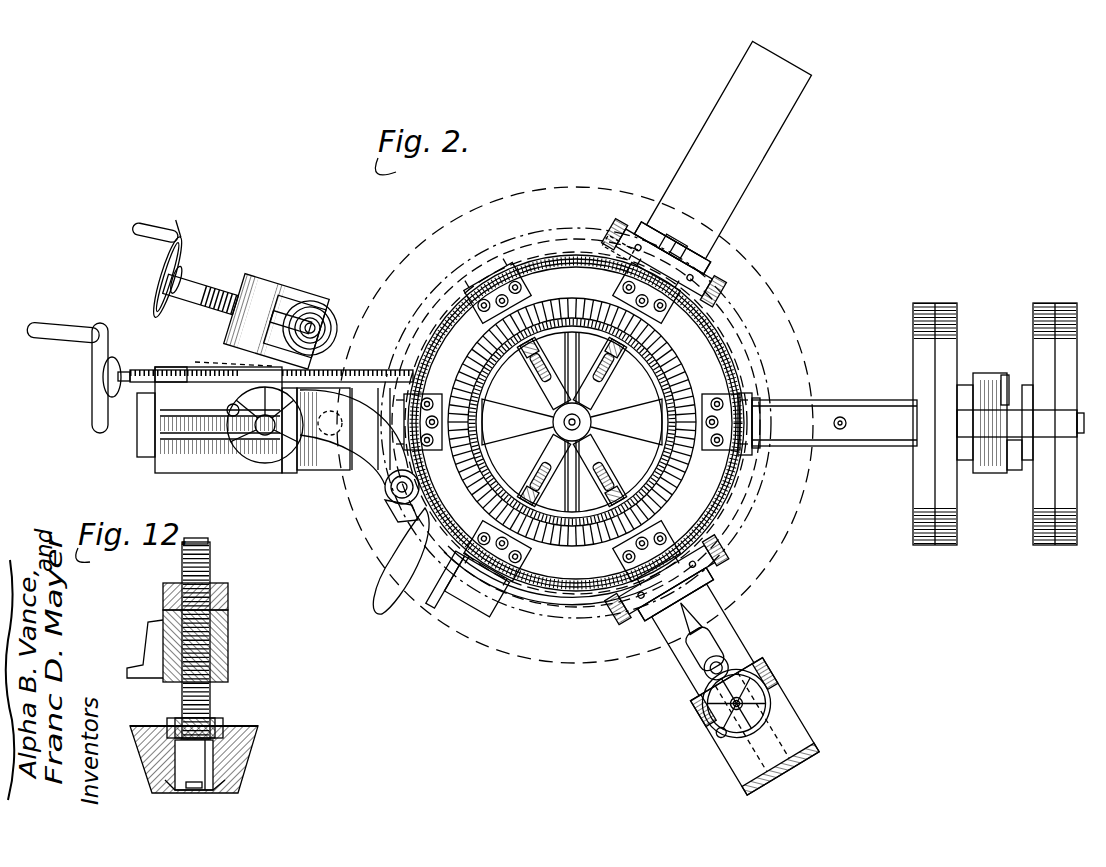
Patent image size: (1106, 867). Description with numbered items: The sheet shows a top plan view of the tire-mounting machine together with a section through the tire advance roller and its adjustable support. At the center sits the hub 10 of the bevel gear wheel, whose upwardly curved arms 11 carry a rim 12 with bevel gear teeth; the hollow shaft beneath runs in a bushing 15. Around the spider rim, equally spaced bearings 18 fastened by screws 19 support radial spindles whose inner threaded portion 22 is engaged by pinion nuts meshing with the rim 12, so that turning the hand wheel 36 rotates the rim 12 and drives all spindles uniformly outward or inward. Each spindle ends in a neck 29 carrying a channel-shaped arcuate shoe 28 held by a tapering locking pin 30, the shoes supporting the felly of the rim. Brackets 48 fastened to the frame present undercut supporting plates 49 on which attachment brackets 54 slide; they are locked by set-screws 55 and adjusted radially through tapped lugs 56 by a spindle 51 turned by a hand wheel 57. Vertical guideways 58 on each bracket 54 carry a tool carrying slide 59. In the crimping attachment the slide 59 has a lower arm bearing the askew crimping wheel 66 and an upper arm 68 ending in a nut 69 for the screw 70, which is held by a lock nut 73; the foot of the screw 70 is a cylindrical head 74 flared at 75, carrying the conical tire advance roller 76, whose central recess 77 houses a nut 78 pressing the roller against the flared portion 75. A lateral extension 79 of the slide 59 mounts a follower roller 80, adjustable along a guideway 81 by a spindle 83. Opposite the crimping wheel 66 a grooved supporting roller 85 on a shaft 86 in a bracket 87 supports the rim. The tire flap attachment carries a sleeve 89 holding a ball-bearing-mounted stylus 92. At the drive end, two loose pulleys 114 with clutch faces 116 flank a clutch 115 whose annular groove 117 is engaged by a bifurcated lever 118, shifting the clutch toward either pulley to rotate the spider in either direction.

In FIG. 2, the hub of bevel gear wheel 10 is at (607, 422).
In FIG. 2, the upwardly curved arms 11 is at (483, 421).
In FIG. 2, the rim with bevel gear teeth 12 is at (575, 425).
In FIG. 2, the bushing 15 is at (572, 422).
In FIG. 2, the bearings 18 is at (620, 441).
In FIG. 2, the screws 19 is at (611, 368).
In FIG. 2, the inner threaded portion 22 is at (517, 422).
In FIG. 2, the arcuate shoe 28 is at (640, 513).
In FIG. 2, the reduced portion or neck 29 is at (638, 499).
In FIG. 2, the locking pins 30 is at (660, 524).
In FIG. 2, the hand wheel 36 is at (380, 561).
In FIG. 2, the brackets 48 is at (140, 458).
In FIG. 2, the horizontal supporting plates 49 is at (754, 368).
In FIG. 2, the spindle 51 is at (136, 377).
In FIG. 2, the brackets 54 is at (510, 581).
In FIG. 2, the set-screws 55 is at (629, 231).
In FIG. 2, the tapped lugs 56 is at (180, 363).
In FIG. 2, the hand wheel 57 is at (90, 412).
In FIG. 2, the vertical guideways 58 is at (286, 472).
In FIG. 2, the tool carrying slide 59 is at (546, 618).
In FIG. 2, the crimping wheel 66 is at (330, 405).
In FIG. 2, the upper arm 68 is at (345, 448).
In FIG. 2, the nut 69 is at (392, 492).
In FIG. 12, the nut 69 is at (163, 646).
In FIG. 2, the screw 70 is at (398, 500).
In FIG. 12, the screw 70 is at (182, 552).
In FIG. 12, the lock nut 73 is at (229, 597).
In FIG. 12, the cylindrical head 74 is at (240, 760).
In FIG. 12, the flared portion 75 is at (215, 792).
In FIG. 2, the tire advance roller 76 is at (398, 512).
In FIG. 12, the tire advance roller 76 is at (258, 732).
In FIG. 12, the central recess 77 is at (168, 726).
In FIG. 12, the nut 78 is at (218, 724).
In FIG. 2, the lateral extension 79 is at (250, 350).
In FIG. 2, the follower roller 80 is at (328, 310).
In FIG. 2, the guideway 81 is at (211, 282).
In FIG. 2, the spindle 83 is at (256, 330).
In FIG. 2, the supporting roller 85 is at (609, 421).
In FIG. 2, the shaft 86 is at (728, 219).
In FIG. 2, the bracket 87 is at (715, 414).
In FIG. 2, the sleeve 89 is at (733, 649).
In FIG. 2, the stylus 92 is at (670, 646).
In FIG. 2, the loose pulleys 114 is at (1064, 295).
In FIG. 2, the clutch 115 is at (1005, 392).
In FIG. 2, the clutch faces 116 is at (958, 450).
In FIG. 2, the annular groove 117 is at (961, 416).
In FIG. 2, the bifurcated lever 118 is at (1004, 466).